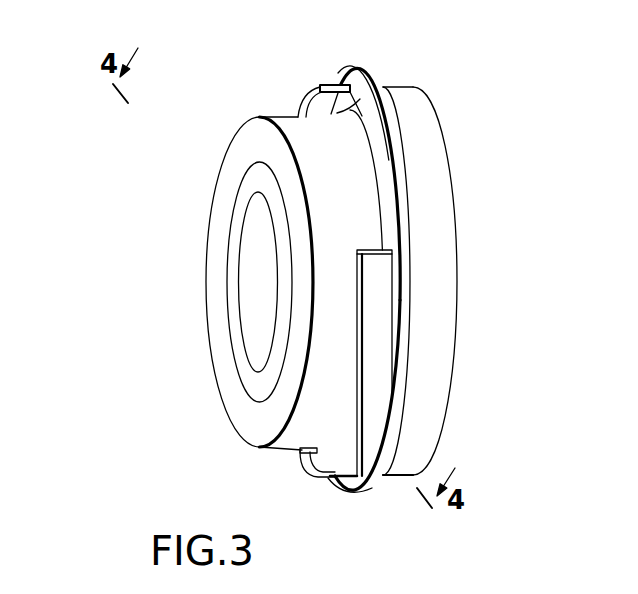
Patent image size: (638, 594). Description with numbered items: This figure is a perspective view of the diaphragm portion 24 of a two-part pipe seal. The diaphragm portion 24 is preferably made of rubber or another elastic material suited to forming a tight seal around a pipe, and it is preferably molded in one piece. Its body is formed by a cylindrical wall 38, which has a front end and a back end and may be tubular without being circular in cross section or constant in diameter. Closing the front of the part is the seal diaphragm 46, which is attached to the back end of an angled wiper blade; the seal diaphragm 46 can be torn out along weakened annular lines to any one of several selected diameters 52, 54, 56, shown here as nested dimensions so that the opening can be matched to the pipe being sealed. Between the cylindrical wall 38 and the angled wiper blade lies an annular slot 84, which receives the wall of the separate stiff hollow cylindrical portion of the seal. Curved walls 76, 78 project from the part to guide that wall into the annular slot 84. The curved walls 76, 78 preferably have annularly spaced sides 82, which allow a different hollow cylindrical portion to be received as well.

The diaphragm portion 24 is at (413, 87).
The cylindrical wall 38 is at (393, 88).
The seal diaphragm 46 is at (257, 306).
The selected diameter 52 is at (247, 371).
The selected diameter 54 is at (245, 402).
The selected diameter 56 is at (238, 446).
The curved wall 76 is at (310, 94).
The curved wall 78 is at (350, 458).
The sides 82 is at (343, 84).
The annular slot 84 is at (330, 98).